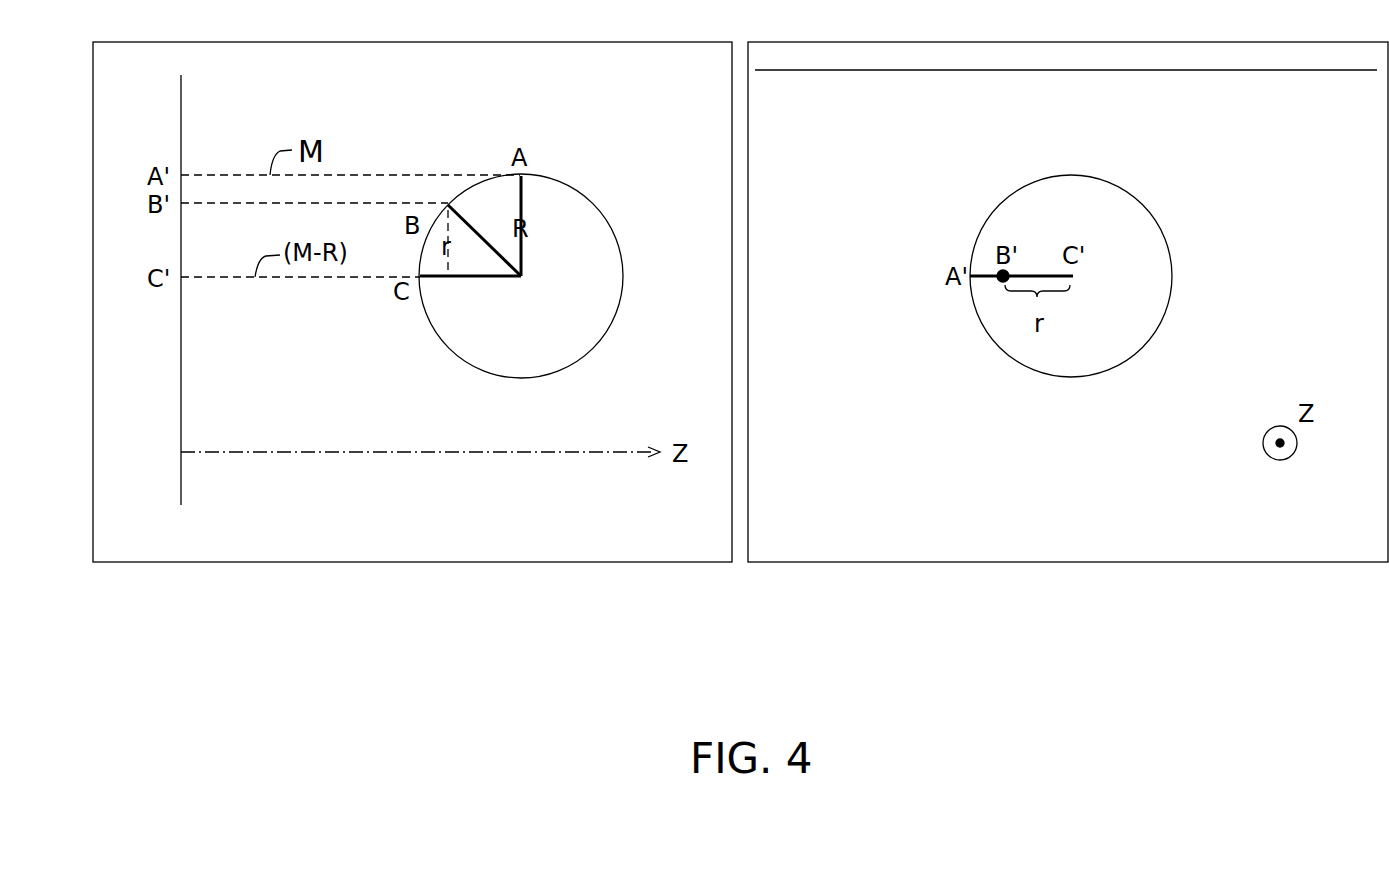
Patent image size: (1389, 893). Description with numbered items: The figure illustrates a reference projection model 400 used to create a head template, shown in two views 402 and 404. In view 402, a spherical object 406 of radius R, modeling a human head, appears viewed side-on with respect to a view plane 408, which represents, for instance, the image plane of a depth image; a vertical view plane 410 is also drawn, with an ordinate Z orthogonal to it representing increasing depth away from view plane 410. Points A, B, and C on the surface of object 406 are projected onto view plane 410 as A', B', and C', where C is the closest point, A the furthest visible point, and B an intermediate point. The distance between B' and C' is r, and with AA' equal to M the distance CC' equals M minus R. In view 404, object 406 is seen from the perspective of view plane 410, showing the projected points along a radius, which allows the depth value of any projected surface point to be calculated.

The reference projection model 400 is at (598, 716).
The view 402 is at (634, 575).
The view 404 is at (816, 575).
The spherical object 406 is at (582, 343).
The view plane 408 is at (1227, 70).
The view plane 410 is at (181, 478).